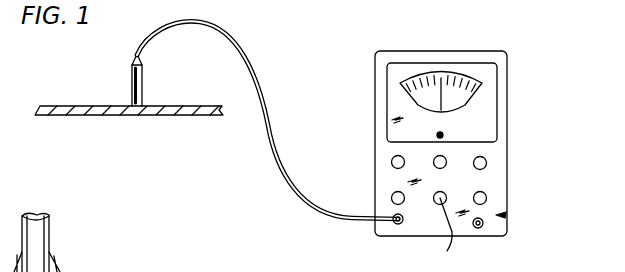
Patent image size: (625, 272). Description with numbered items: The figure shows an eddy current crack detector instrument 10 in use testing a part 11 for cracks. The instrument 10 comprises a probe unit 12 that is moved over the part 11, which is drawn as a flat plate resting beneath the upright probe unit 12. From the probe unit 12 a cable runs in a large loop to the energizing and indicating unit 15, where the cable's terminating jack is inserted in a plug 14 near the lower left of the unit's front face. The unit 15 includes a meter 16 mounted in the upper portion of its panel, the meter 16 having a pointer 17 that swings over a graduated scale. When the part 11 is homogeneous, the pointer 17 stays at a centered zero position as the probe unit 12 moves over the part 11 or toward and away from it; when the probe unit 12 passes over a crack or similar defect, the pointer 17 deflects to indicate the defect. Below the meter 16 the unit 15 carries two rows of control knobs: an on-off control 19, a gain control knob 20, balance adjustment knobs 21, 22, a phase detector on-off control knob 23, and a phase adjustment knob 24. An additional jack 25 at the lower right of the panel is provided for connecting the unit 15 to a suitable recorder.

The eddy current instrument 10 is at (84, 80).
The part 11 is at (163, 116).
The probe unit 12 is at (143, 88).
The plug 14 is at (396, 224).
The energizing and indicating unit 15 is at (505, 215).
The meter 16 is at (486, 115).
The pointer 17 is at (437, 93).
The on-off control 19 is at (439, 231).
The gain control knob 20 is at (446, 160).
The balance adjustment knob 21 is at (487, 198).
The balance adjustment knob 22 is at (487, 165).
The phase detector on-off control knob 23 is at (391, 198).
The phase adjustment knob 24 is at (391, 162).
The additional jack 25 is at (482, 226).